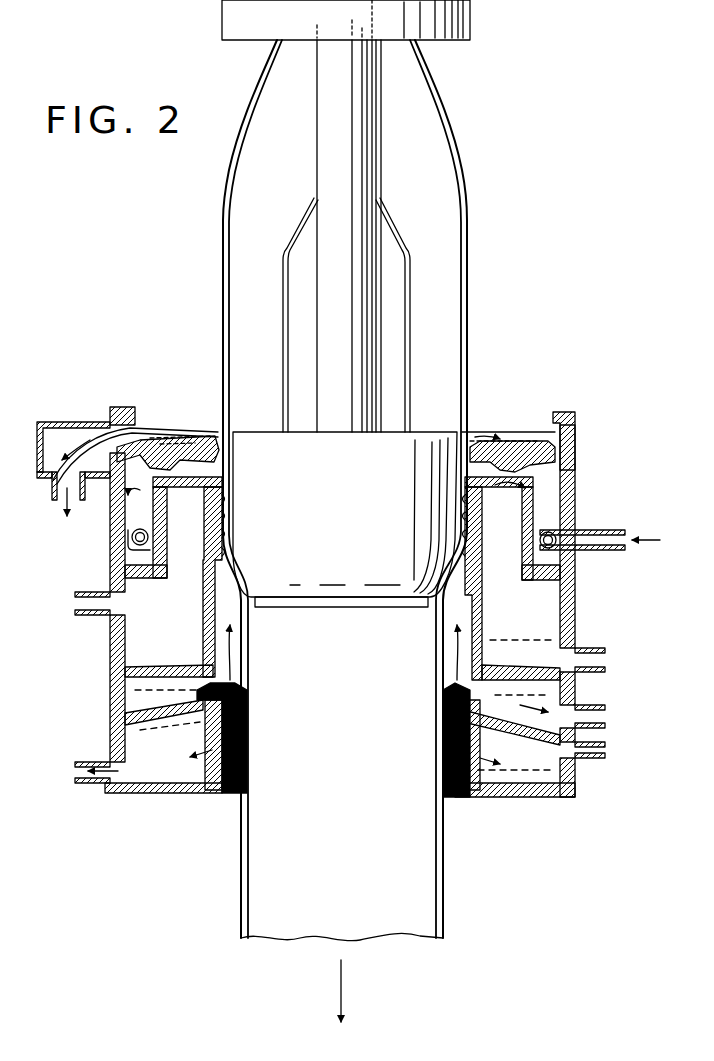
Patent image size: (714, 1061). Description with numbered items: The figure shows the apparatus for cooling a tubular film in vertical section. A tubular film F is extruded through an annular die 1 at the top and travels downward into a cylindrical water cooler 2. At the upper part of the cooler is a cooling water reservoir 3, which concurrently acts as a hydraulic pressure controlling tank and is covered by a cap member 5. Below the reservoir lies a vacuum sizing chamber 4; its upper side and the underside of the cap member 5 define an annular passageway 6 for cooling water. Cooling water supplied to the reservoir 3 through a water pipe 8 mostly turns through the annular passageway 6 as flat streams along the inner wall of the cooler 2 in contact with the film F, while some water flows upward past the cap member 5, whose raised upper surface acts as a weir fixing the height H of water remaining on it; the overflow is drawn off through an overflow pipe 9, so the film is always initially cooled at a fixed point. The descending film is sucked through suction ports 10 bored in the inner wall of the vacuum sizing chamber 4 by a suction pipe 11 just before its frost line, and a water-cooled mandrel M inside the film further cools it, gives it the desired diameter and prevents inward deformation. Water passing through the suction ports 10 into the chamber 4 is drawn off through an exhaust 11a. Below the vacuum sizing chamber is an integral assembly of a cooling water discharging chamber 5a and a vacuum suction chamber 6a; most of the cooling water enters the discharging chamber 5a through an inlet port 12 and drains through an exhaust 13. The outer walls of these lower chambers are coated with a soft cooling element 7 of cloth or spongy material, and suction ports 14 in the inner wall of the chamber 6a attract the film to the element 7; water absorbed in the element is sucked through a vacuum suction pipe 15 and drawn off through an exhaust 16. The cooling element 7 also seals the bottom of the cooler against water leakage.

The annular die 1 is at (470, 10).
The tubular film F is at (462, 140).
The water-cooled mandrel M is at (346, 608).
The cylindrical water cooler 2 is at (340, 615).
The cooling water reservoir 3 is at (500, 450).
The height of water on the cap member H is at (488, 442).
The vacuum sizing chamber 4 is at (508, 573).
The cap member 5 is at (180, 446).
The annular passageway 6 is at (206, 447).
The soft cooling element 7 is at (236, 789).
The water pipe 8 is at (606, 531).
The overflow pipe 9 is at (50, 488).
The suction ports 10 is at (205, 504).
The suction pipe 11 is at (90, 619).
The exhaust 11a is at (598, 659).
The inlet port 12 is at (489, 679).
The exhaust 13 is at (597, 705).
The suction ports 14 is at (215, 746).
The cooling water discharging chamber 5a is at (530, 705).
The vacuum suction pipe 15 is at (595, 757).
The vacuum suction chamber 6a is at (542, 765).
The exhaust 16 is at (92, 785).